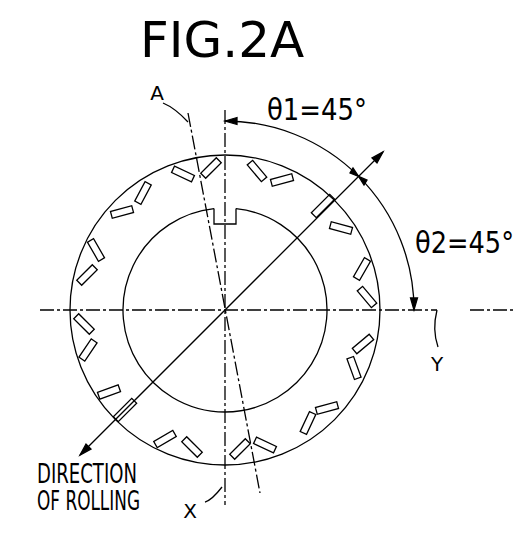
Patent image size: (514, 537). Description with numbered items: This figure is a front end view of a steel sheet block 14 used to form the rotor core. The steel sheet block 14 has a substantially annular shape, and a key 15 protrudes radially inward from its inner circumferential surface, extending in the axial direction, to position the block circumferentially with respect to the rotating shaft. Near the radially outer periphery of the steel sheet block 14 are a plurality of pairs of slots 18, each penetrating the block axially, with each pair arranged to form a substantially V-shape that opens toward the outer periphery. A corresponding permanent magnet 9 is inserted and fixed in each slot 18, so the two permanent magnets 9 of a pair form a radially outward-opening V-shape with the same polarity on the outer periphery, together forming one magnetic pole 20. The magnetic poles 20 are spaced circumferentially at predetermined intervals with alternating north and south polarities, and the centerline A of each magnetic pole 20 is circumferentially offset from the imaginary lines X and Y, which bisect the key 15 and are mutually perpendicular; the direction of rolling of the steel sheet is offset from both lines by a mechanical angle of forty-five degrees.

The permanent magnet 9 is at (183, 163).
The steel sheet block 14 is at (349, 398).
The key 15 is at (214, 212).
The slot 18 is at (174, 172).
The magnetic pole 20 is at (192, 168).